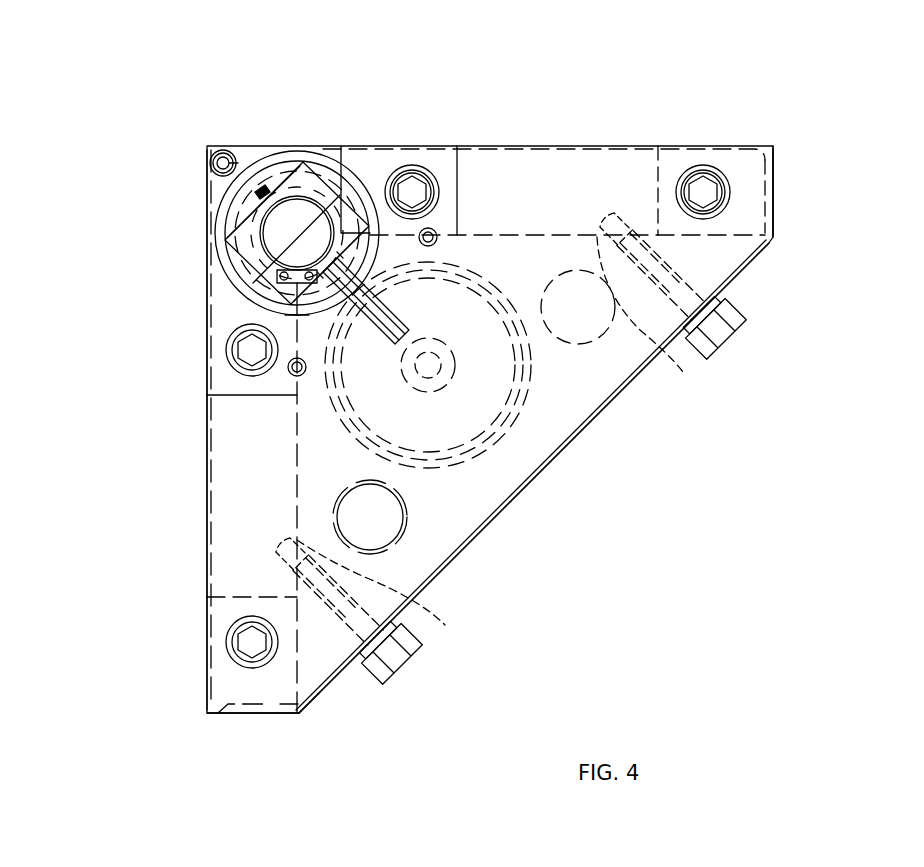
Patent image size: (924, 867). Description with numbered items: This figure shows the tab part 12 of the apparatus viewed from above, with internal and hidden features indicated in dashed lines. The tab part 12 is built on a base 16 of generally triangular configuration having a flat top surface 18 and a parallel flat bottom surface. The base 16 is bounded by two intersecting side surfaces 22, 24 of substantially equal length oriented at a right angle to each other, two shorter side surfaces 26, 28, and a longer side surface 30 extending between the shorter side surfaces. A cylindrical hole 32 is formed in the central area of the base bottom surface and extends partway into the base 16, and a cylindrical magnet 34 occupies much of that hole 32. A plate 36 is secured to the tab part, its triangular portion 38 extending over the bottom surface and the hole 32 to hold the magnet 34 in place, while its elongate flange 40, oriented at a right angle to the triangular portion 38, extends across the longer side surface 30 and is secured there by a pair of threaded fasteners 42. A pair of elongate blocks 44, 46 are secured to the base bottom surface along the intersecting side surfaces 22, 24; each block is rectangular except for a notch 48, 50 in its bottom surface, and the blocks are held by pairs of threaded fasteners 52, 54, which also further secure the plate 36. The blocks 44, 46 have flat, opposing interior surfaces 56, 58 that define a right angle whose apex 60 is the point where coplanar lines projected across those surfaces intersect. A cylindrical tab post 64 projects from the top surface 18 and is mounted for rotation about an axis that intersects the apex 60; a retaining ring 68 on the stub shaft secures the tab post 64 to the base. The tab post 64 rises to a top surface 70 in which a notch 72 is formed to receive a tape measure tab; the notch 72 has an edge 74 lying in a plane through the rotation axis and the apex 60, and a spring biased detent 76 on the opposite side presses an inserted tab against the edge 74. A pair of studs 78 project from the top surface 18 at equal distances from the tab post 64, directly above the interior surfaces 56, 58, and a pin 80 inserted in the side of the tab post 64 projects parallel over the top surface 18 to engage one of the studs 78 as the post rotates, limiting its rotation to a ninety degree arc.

The tab part 12 is at (820, 150).
The base 16 is at (775, 215).
The top surface 18 is at (610, 377).
The side surface 22 is at (207, 549).
The side surface 24 is at (535, 145).
The shorter side surface 26 is at (247, 714).
The shorter side surface 28 is at (775, 190).
The longer side surface 30 is at (527, 483).
The cylindrical hole 32 is at (527, 407).
The cylindrical magnet 34 is at (457, 470).
The plate 36 is at (223, 711).
The triangular portion 38 is at (288, 714).
The elongate flange 40 is at (323, 694).
The threaded fasteners 42 is at (716, 331).
The elongate block 44 is at (209, 263).
The elongate block 46 is at (328, 147).
The notch 48 is at (222, 483).
The notch 50 is at (580, 164).
The threaded fasteners 52 is at (243, 350).
The threaded fasteners 54 is at (412, 178).
The interior surface 56 is at (445, 628).
The interior surface 58 is at (683, 378).
The apex 60 is at (306, 232).
The tab post 64 is at (293, 306).
The retaining ring 68 is at (245, 290).
The top surface 70 is at (307, 162).
The notch 72 is at (277, 278).
The edge 74 is at (335, 228).
The spring biased detent 76 is at (290, 190).
The studs 78 is at (440, 226).
The pin 80 is at (395, 328).